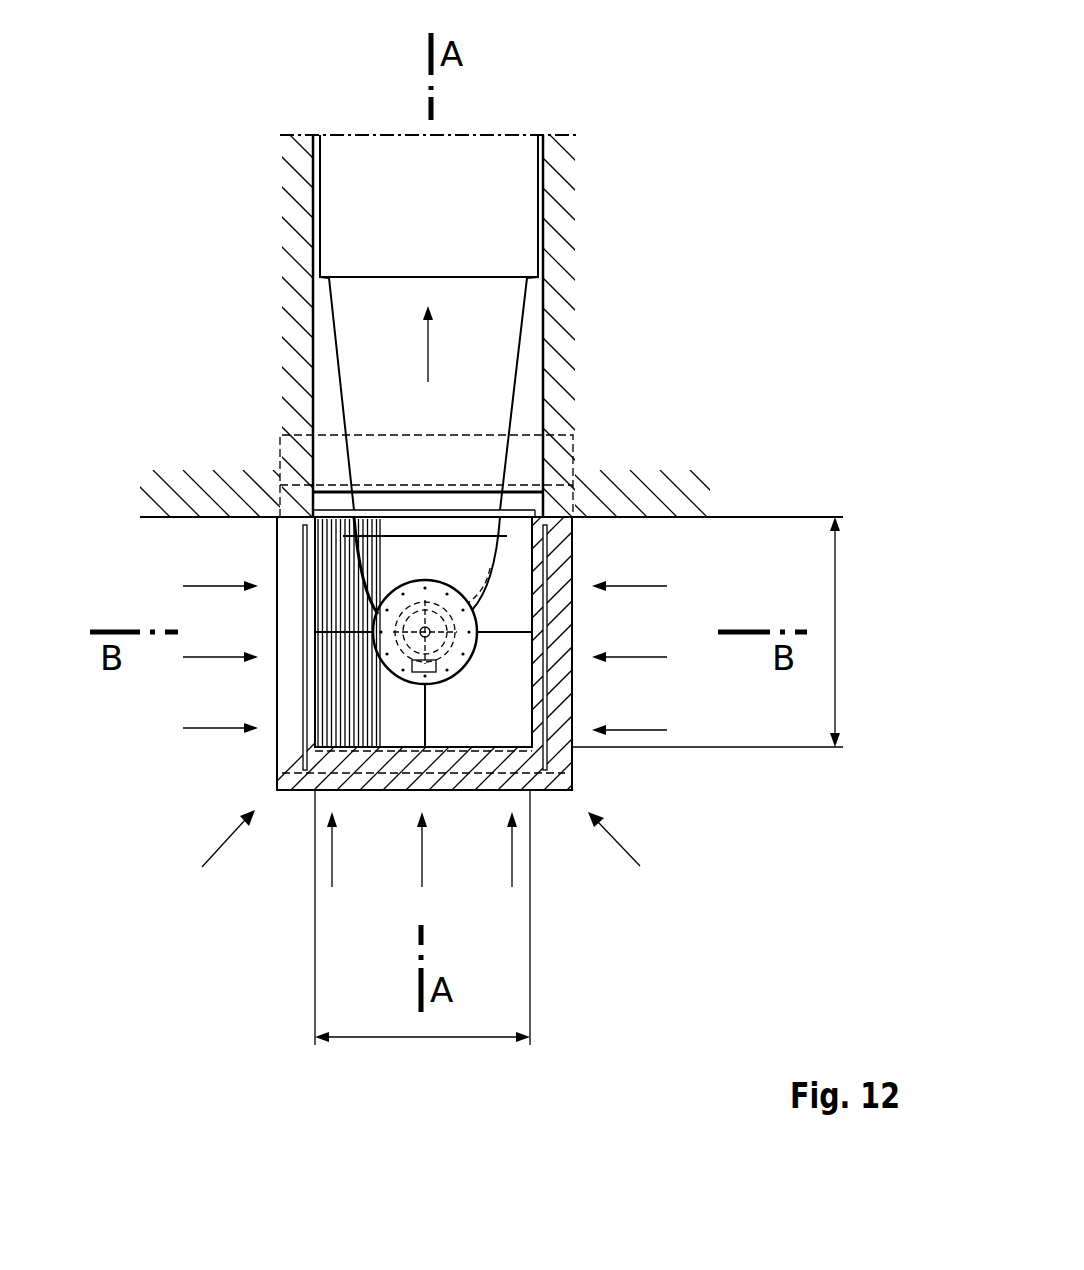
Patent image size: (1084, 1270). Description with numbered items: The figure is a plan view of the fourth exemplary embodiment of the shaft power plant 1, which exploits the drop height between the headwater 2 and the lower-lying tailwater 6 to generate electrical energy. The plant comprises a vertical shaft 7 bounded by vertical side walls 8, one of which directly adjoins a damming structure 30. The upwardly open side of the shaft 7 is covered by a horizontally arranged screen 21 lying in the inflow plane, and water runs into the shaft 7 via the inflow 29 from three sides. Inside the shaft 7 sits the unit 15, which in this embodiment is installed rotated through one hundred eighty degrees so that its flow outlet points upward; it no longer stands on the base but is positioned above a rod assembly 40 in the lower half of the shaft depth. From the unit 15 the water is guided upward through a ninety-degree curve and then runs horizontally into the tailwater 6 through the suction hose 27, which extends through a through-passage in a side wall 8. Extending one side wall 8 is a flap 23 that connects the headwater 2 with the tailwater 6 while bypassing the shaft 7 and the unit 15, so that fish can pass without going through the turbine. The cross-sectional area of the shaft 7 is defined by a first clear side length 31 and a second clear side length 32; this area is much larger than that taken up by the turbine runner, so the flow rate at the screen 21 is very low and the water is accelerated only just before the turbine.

The shaft power plant 1 is at (580, 72).
The headwater 2 is at (705, 565).
The tailwater 6 is at (492, 110).
The vertical shaft 7 is at (235, 778).
The side walls 8 is at (465, 790).
The unit 15 is at (478, 680).
The screen 21 is at (327, 708).
The flap 23 is at (520, 500).
The suction hose 27 is at (520, 340).
The inflow 29 is at (646, 655).
The damming structure 30 is at (200, 487).
The first clear side length 31 is at (420, 1040).
The second clear side length 32 is at (835, 633).
The rod assembly 40 is at (505, 632).